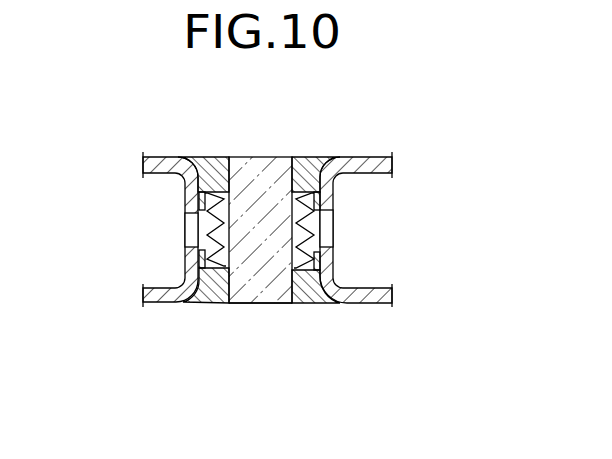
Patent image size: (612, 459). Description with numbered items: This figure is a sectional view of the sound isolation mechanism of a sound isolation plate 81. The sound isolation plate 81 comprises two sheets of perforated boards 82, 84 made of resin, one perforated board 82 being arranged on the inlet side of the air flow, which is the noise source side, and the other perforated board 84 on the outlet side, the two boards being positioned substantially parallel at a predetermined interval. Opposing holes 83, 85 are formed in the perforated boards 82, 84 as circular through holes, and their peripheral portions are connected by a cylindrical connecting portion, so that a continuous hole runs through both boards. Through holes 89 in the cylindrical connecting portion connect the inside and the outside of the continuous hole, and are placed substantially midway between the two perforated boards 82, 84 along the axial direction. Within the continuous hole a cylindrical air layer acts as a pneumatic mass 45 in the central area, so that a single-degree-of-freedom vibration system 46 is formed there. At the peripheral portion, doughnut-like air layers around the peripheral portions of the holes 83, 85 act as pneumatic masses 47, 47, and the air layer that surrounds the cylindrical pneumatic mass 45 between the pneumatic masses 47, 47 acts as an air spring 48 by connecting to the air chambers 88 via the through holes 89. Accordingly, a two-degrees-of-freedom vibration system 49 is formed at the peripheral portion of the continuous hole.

The pneumatic mass 45 is at (240, 304).
The single-degree-of-freedom vibration system 46 is at (253, 154).
The pneumatic mass 47 is at (210, 157).
The air spring 48 is at (200, 204).
The two-degrees-of-freedom vibration system 49 is at (205, 254).
The sound isolation plate 81 is at (357, 152).
The perforated board 82 is at (387, 157).
The hole 83 is at (330, 158).
The perforated board 84 is at (380, 304).
The hole 85 is at (332, 304).
The air chamber 88 is at (105, 250).
The through hole 89 is at (188, 228).